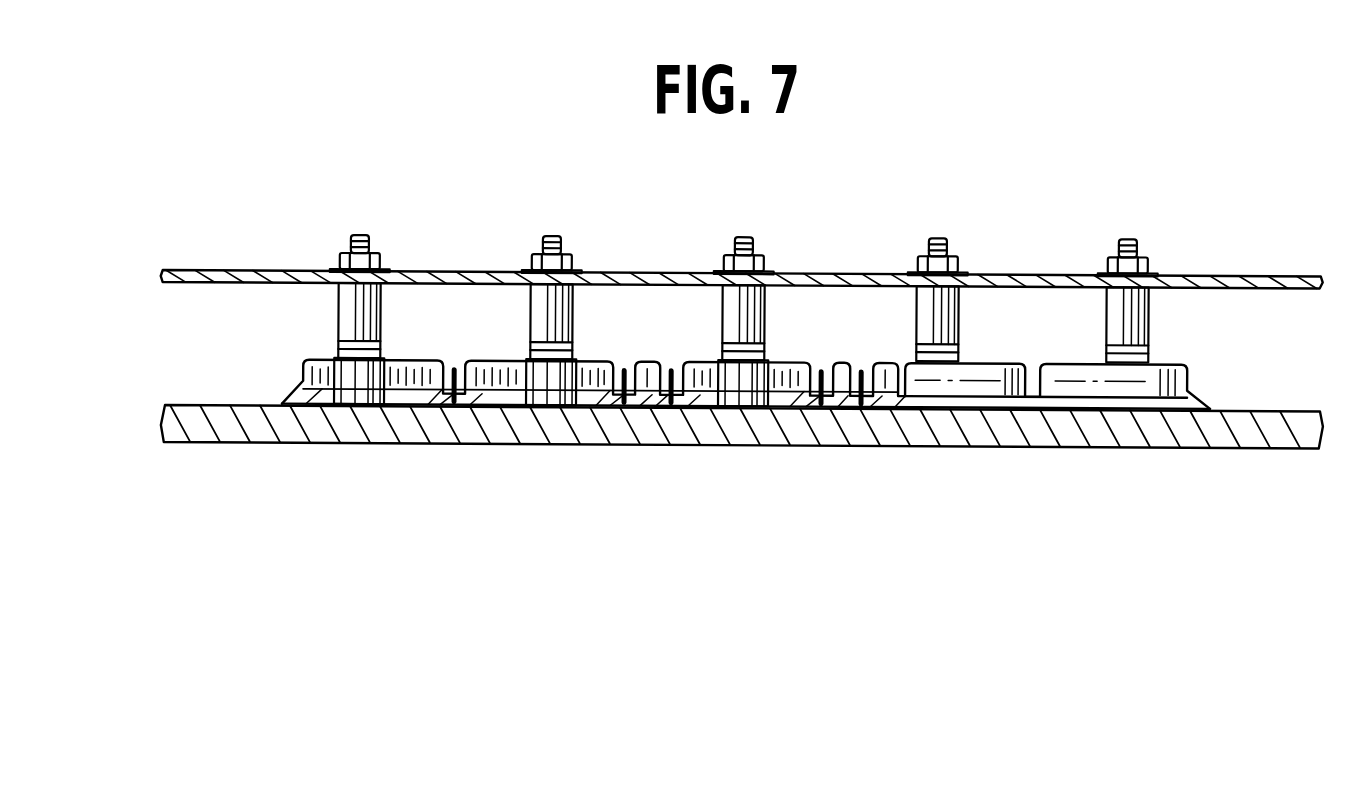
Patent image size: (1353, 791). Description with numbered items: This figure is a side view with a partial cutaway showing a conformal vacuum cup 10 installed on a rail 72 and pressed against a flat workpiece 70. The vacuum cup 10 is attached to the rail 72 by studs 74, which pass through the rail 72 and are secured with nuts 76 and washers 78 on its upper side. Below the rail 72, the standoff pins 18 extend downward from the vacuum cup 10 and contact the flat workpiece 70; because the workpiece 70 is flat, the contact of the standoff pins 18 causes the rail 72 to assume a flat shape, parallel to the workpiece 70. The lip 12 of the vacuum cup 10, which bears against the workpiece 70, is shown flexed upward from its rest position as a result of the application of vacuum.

The workpiece 70 is at (160, 421).
The rail 72 is at (160, 278).
The stud 74 is at (354, 234).
The nut 76 is at (335, 265).
The washer 78 is at (323, 269).
The standoff pin 18 is at (337, 340).
The vacuum cup 10 is at (298, 362).
The lip 12 is at (282, 400).